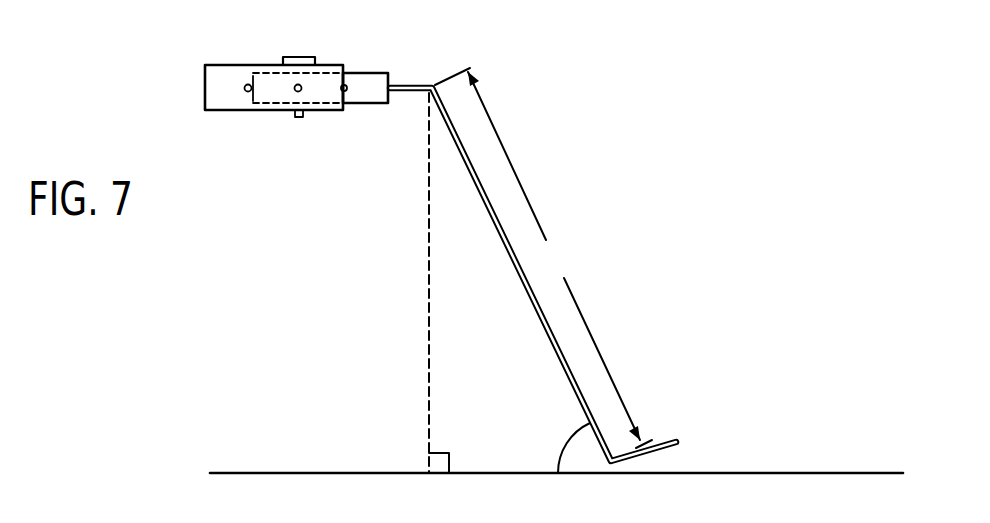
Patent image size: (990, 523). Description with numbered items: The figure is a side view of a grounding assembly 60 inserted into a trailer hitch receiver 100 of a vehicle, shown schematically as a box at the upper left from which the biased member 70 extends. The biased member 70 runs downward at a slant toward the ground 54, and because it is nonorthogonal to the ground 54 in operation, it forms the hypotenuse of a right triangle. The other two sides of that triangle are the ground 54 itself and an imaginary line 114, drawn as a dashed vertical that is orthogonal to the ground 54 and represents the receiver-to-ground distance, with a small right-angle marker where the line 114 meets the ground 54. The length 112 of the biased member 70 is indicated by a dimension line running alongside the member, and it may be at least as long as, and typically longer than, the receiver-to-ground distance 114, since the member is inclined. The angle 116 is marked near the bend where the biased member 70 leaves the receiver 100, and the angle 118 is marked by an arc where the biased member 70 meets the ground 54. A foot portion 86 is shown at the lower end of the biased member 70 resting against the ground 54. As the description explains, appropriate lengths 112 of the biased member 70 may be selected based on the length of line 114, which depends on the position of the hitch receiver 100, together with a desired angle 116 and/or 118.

The trailer hitch receiver 100 is at (232, 43).
The grounding assembly 60 is at (481, 236).
The biased member 70 is at (529, 303).
The angle 116 is at (449, 131).
The foot end portion 86 is at (648, 452).
The receiver-to-ground distance 114 is at (429, 278).
The angle 118 is at (558, 453).
The length 112 is at (543, 258).
The ground 54 is at (482, 472).